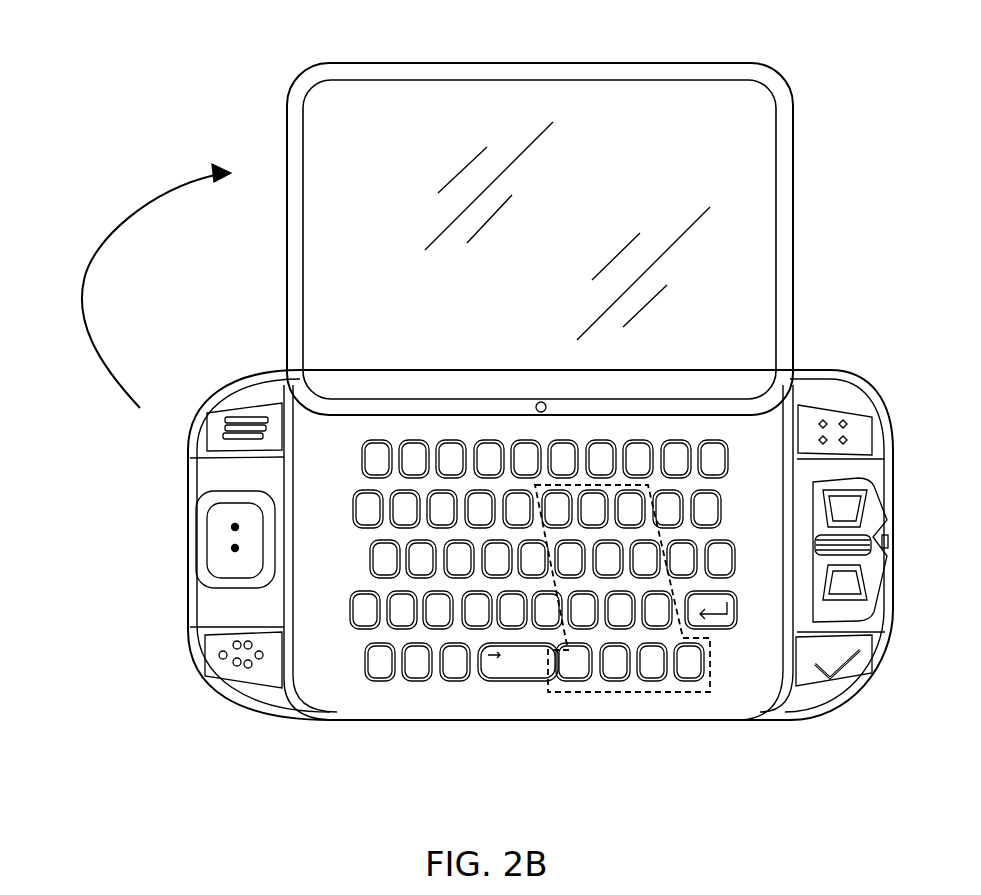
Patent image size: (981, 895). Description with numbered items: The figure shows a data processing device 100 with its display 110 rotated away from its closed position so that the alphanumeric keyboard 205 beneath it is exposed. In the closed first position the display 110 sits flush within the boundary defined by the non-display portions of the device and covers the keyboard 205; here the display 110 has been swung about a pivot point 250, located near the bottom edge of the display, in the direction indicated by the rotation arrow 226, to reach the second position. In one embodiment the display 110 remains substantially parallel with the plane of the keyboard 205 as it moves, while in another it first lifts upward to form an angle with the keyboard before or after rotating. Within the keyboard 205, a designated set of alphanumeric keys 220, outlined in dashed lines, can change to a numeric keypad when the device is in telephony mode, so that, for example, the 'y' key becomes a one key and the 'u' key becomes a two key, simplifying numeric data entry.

The data processing device 100 is at (240, 37).
The display 110 is at (530, 72).
The alphanumeric keyboard 205 is at (437, 347).
The designated set of alphanumeric keys 220 is at (605, 692).
The rotation arrow 226 is at (97, 257).
The pivot point 250 is at (545, 402).